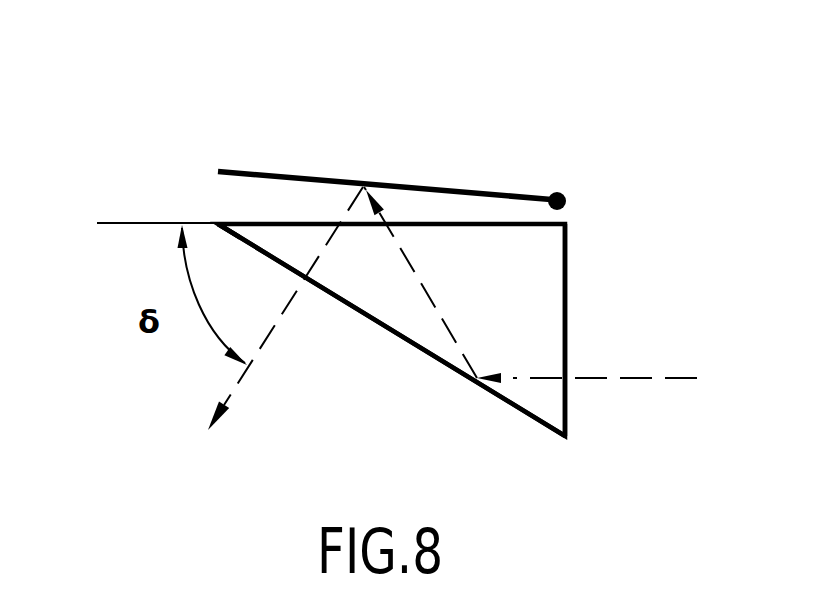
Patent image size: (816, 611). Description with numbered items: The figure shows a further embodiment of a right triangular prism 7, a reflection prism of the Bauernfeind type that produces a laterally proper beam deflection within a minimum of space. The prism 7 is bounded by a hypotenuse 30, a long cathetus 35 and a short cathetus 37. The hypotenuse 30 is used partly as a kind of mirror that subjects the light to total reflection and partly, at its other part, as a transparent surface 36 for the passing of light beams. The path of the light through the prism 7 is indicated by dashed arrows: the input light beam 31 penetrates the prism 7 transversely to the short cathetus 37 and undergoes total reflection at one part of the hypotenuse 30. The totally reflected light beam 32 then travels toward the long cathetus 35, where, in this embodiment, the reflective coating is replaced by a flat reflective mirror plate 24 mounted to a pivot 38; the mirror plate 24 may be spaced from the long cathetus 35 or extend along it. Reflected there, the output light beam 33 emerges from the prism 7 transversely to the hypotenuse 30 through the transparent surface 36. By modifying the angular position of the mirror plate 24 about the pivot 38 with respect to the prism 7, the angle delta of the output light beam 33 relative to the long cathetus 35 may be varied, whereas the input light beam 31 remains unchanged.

The right triangular prism 7 is at (548, 247).
The flat reflective mirror plate 24 is at (443, 186).
The hypotenuse 30 is at (375, 320).
The input light beam 31 is at (680, 378).
The totally reflected light beam 32 is at (422, 287).
The output light beam 33 is at (257, 355).
The long cathetus 35 is at (252, 223).
The transparent surface 36 is at (230, 232).
The short cathetus 37 is at (567, 298).
The pivot 38 is at (559, 193).